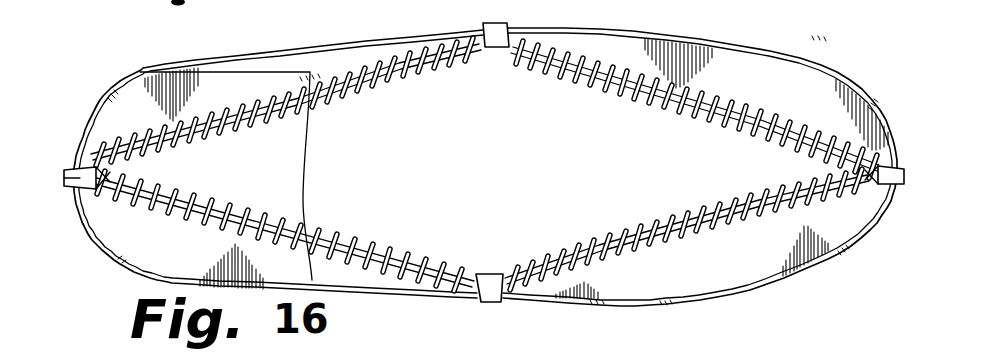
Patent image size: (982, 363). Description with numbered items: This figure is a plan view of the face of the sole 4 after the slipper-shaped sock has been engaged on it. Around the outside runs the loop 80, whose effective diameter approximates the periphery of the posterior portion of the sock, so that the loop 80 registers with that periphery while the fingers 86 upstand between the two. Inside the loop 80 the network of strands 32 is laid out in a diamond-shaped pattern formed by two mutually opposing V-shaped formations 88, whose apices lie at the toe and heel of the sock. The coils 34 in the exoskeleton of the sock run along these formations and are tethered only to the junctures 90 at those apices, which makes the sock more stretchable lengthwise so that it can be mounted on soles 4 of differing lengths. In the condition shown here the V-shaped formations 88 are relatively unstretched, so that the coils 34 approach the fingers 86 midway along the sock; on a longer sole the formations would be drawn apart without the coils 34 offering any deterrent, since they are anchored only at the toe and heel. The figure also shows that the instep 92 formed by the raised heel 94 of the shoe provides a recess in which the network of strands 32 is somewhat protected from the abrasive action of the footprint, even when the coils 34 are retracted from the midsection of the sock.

The sole 4 is at (497, 173).
The network of strands 32 is at (367, 266).
The coils 34 is at (359, 93).
The loop 80 is at (777, 57).
The fingers 86 is at (490, 301).
The V-shaped formations 88 is at (205, 146).
The junctures 90 is at (72, 177).
The instep 92 is at (305, 191).
The raised heel 94 is at (184, 262).